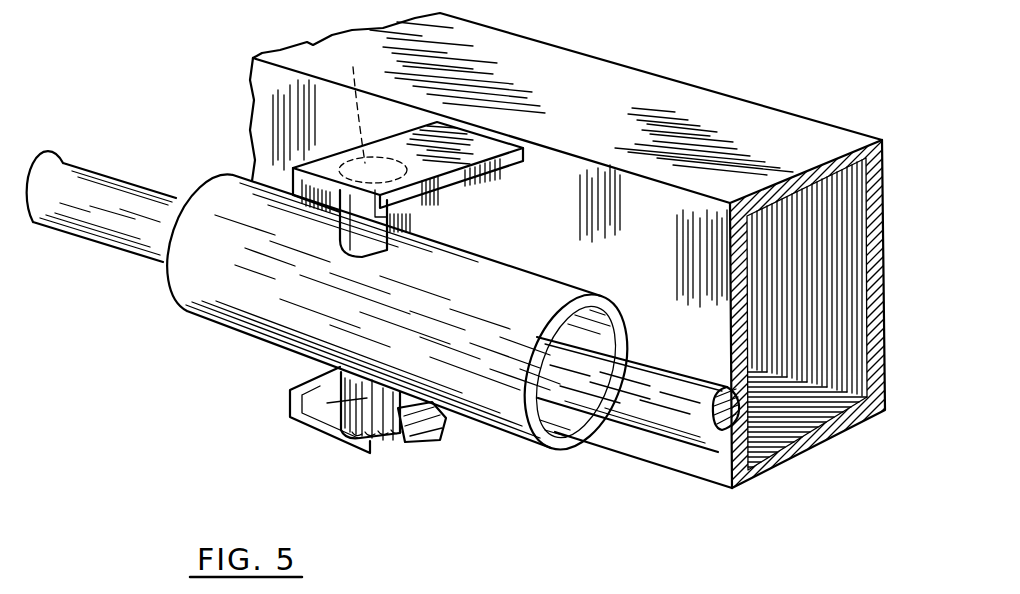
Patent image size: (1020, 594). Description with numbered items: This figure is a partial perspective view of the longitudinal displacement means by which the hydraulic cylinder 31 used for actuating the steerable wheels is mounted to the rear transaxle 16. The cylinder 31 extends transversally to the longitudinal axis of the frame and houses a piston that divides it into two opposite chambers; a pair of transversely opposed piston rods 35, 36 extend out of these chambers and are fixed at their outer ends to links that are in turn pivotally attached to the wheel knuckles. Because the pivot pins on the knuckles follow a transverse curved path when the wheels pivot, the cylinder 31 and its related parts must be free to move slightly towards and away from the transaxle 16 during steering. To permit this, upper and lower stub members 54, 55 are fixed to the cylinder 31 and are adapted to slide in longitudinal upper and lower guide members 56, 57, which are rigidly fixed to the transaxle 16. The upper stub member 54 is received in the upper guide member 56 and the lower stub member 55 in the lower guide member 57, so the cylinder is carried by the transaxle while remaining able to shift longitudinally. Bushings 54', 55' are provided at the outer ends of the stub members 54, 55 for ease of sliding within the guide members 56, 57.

The rear transaxle 16 is at (607, 117).
The hydraulic cylinder 31 is at (457, 288).
The piston rod 35 is at (90, 193).
The piston rod 36 is at (652, 387).
The upper stub member 54 is at (427, 223).
The bushing 54' is at (352, 103).
The lower stub member 55 is at (306, 414).
The bushing 55' is at (401, 443).
The upper guide member 56 is at (477, 137).
The lower guide member 57 is at (297, 401).